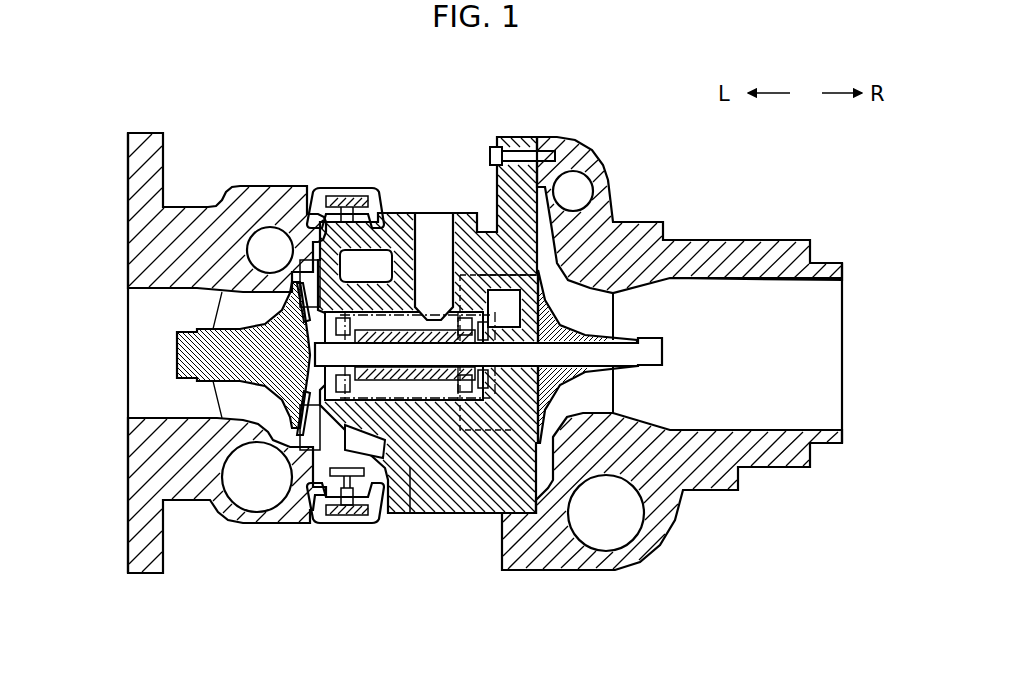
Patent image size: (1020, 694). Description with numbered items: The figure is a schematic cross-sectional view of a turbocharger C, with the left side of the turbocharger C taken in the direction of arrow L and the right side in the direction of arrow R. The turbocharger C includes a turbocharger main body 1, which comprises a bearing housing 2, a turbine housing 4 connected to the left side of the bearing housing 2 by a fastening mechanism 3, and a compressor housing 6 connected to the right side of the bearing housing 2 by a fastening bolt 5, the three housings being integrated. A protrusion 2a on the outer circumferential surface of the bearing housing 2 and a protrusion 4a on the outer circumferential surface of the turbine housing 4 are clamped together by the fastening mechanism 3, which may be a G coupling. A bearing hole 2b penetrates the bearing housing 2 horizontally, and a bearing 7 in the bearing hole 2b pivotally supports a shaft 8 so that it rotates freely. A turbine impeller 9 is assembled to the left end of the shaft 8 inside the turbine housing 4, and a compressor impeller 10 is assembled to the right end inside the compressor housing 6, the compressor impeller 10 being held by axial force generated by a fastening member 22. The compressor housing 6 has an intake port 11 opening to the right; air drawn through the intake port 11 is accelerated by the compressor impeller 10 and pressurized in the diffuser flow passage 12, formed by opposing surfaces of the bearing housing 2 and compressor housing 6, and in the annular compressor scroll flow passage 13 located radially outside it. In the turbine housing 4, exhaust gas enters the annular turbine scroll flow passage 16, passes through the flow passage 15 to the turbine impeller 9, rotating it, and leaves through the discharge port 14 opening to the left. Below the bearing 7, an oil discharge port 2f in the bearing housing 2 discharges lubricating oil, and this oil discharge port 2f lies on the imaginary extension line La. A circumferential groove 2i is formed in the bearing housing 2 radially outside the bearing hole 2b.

The turbocharger C is at (162, 56).
The turbocharger main body 1 is at (234, 93).
The bearing housing 2 is at (512, 136).
The protrusion 2a is at (363, 495).
The bearing hole 2b is at (403, 398).
The oil discharge port 2f is at (420, 513).
The groove 2i is at (560, 467).
The fastening mechanism 3 is at (350, 187).
The turbine housing 4 is at (248, 186).
The protrusion 4a is at (333, 500).
The fastening bolt 5 is at (486, 146).
The compressor housing 6 is at (688, 240).
The bearing 7 is at (450, 317).
The shaft 8 is at (400, 343).
The turbine impeller 9 is at (218, 402).
The compressor impeller 10 is at (612, 392).
The intake port 11 is at (800, 428).
The diffuser flow passage 12 is at (557, 460).
The compressor scroll flow passage 13 is at (577, 182).
The discharge port 14 is at (155, 290).
The flow passage 15 is at (283, 268).
The turbine scroll flow passage 16 is at (248, 503).
The fastening member 22 is at (665, 360).
The extension line La is at (486, 437).